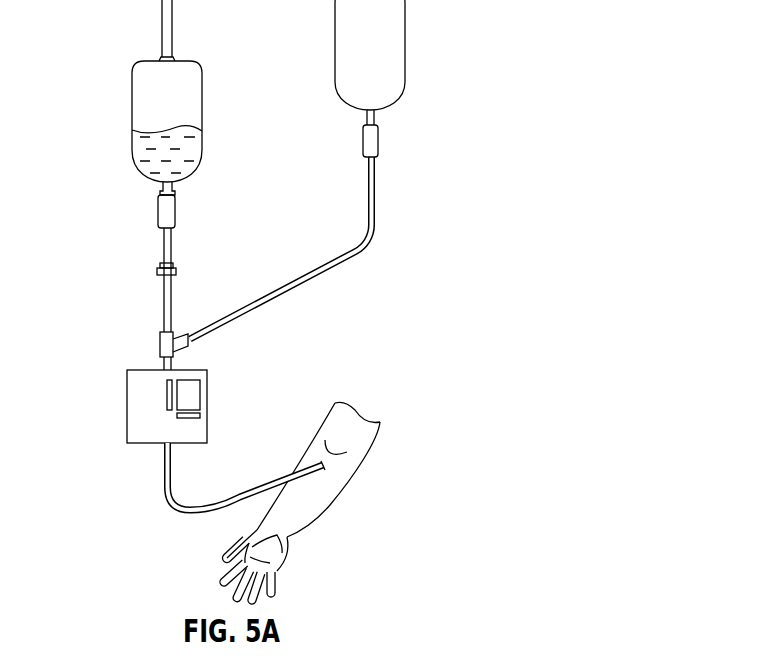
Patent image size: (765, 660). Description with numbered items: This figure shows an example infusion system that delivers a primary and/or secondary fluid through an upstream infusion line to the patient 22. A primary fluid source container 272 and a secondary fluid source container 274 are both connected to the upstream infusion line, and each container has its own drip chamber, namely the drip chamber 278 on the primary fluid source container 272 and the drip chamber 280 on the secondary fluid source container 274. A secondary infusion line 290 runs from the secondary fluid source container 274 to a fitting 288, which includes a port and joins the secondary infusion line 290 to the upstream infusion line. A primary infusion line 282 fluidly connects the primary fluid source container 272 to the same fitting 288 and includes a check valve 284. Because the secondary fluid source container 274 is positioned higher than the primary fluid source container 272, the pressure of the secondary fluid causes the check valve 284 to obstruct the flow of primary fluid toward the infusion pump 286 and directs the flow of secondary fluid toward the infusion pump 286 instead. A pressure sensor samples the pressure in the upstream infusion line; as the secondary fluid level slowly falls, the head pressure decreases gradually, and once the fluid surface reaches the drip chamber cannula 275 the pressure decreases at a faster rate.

The patient 22 is at (356, 438).
The primary fluid source container 272 is at (202, 110).
The secondary fluid source container 274 is at (405, 38).
The drip chamber cannula 275 is at (374, 118).
The drip chamber 278 is at (158, 210).
The drip chamber 280 is at (378, 148).
The primary infusion line 282 is at (161, 250).
The check valve 284 is at (177, 268).
The infusion pump 286 is at (127, 406).
The fitting 288 is at (158, 345).
The secondary infusion line 290 is at (376, 208).